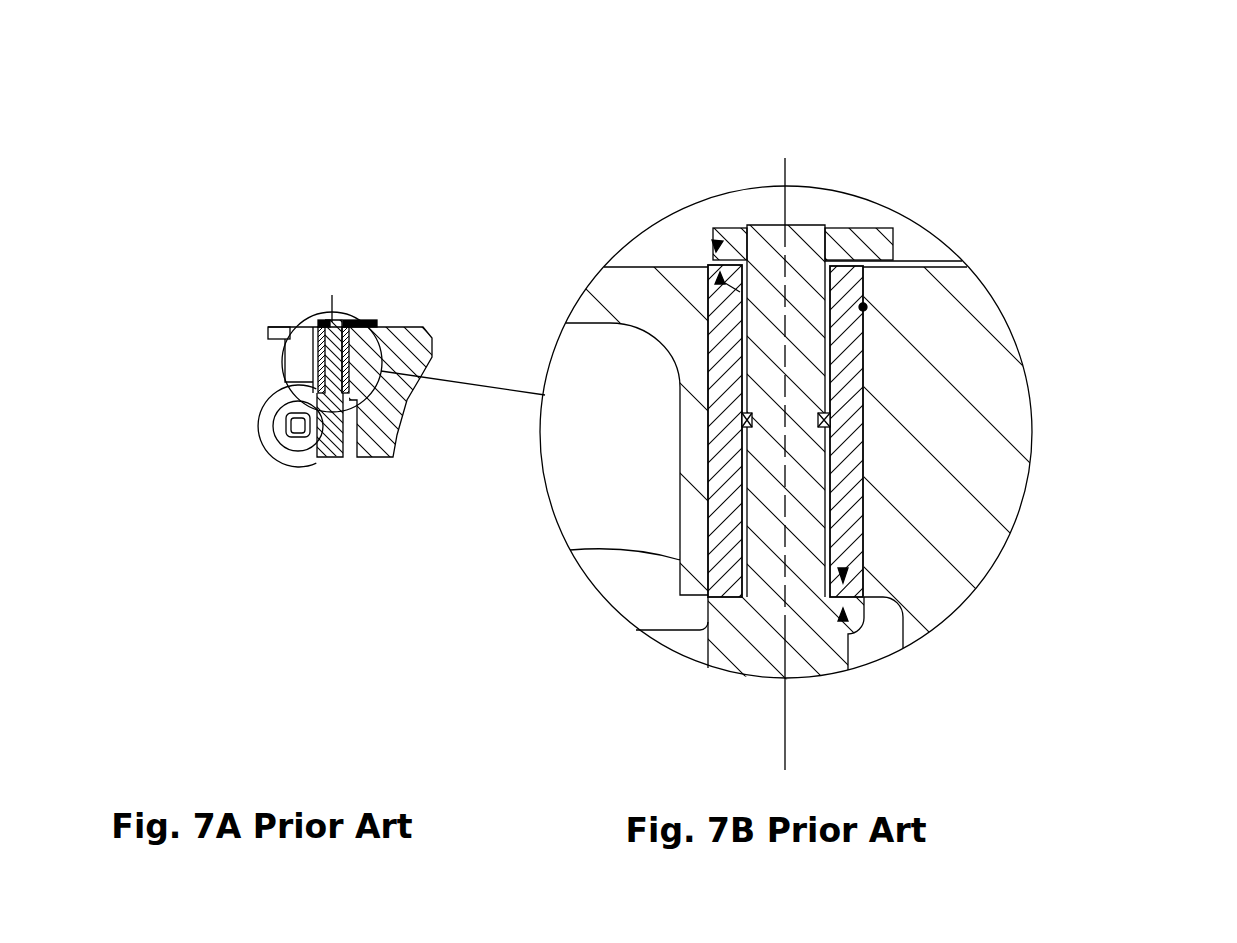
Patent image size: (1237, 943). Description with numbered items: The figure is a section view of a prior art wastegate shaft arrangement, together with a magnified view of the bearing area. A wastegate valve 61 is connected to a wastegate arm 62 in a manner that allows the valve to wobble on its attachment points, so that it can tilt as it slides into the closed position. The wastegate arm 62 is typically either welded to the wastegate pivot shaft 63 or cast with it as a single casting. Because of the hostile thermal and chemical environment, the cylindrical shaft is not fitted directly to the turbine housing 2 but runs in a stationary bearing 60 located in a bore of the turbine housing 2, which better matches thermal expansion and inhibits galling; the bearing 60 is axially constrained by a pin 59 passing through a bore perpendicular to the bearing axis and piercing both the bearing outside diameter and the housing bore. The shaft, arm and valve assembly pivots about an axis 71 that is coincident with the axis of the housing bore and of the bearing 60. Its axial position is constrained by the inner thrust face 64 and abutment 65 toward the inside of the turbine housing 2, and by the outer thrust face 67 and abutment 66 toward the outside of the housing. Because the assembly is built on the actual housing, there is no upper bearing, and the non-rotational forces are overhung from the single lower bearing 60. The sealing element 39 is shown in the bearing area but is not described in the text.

In FIG. 7A, the turbine housing 2 is at (407, 352).
In FIG. 7B, the turbine housing 2 is at (627, 298).
In FIG. 7B, the seal ring 39 is at (831, 415).
In FIG. 7B, the pin 59 is at (866, 307).
In FIG. 7A, the bearing 60 is at (333, 359).
In FIG. 7B, the bearing 60 is at (720, 462).
In FIG. 7A, the wastegate valve 61 is at (293, 457).
In FIG. 7A, the wastegate arm 62 is at (370, 320).
In FIG. 7B, the wastegate arm 62 is at (852, 243).
In FIG. 7A, the wastegate pivot shaft 63 is at (337, 457).
In FIG. 7B, the wastegate pivot shaft 63 is at (770, 530).
In FIG. 7B, the inner thrust face 64 is at (843, 580).
In FIG. 7B, the abutment 65 is at (847, 620).
In FIG. 7B, the abutment 66 is at (717, 246).
In FIG. 7B, the outer thrust face 67 is at (865, 353).
In FIG. 7B, the axis 71 is at (785, 165).